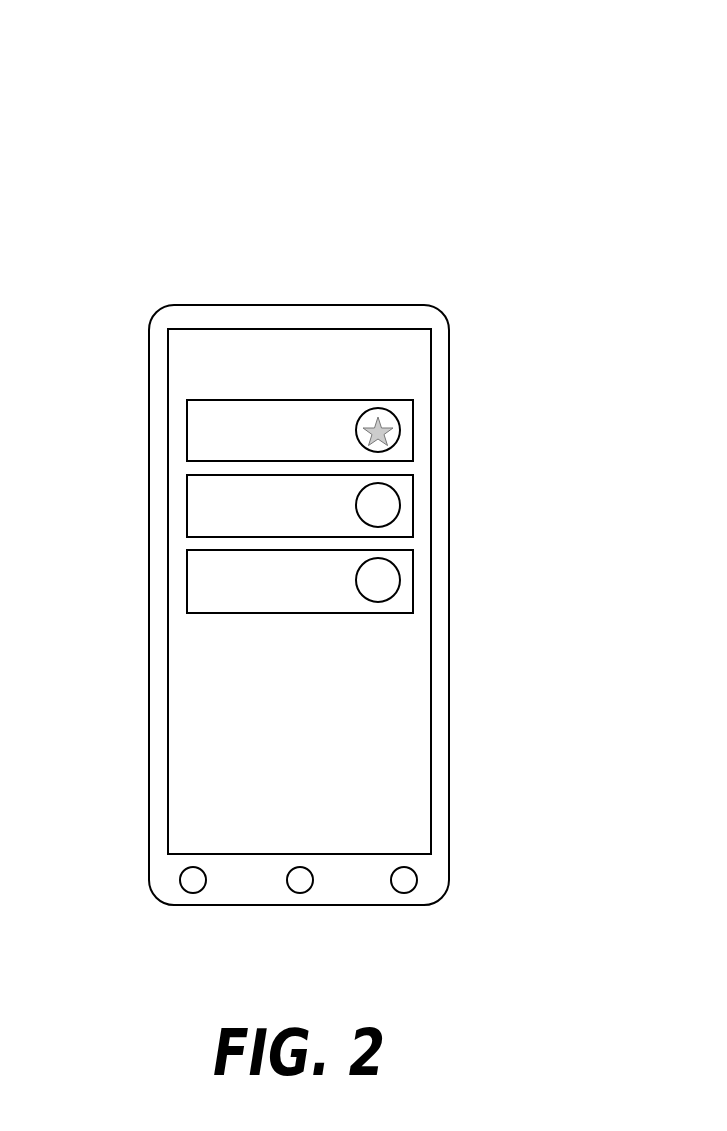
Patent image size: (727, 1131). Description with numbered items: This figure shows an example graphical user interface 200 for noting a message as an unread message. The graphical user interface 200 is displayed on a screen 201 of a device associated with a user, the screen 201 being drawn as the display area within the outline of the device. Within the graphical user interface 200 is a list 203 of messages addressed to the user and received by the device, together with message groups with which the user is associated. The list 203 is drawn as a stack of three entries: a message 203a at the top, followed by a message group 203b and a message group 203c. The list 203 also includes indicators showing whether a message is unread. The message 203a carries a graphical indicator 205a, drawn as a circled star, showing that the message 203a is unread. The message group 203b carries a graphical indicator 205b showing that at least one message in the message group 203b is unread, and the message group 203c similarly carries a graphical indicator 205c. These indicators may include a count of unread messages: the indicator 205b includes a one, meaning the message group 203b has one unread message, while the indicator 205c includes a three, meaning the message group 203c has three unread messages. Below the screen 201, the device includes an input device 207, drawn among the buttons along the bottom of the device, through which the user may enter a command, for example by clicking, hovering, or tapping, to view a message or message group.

The graphical user interface 200 is at (284, 37).
The screen 201 is at (405, 353).
The list 203 is at (244, 505).
The message 203a is at (300, 430).
The message group 203b is at (300, 505).
The message group 203c is at (300, 581).
The graphical indicator 205a is at (390, 420).
The graphical indicator 205b is at (390, 495).
The graphical indicator 205c is at (390, 575).
The input device 207 is at (415, 878).